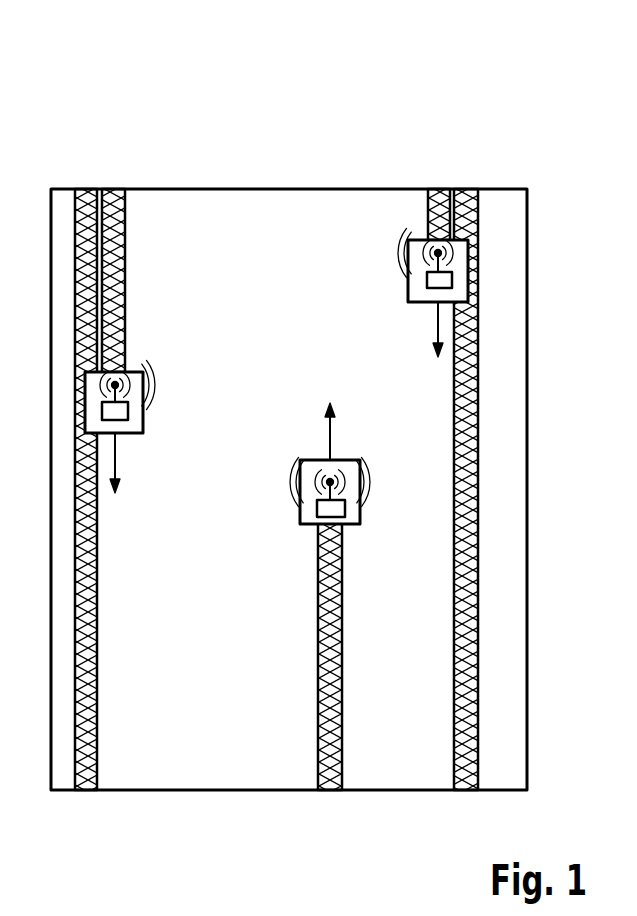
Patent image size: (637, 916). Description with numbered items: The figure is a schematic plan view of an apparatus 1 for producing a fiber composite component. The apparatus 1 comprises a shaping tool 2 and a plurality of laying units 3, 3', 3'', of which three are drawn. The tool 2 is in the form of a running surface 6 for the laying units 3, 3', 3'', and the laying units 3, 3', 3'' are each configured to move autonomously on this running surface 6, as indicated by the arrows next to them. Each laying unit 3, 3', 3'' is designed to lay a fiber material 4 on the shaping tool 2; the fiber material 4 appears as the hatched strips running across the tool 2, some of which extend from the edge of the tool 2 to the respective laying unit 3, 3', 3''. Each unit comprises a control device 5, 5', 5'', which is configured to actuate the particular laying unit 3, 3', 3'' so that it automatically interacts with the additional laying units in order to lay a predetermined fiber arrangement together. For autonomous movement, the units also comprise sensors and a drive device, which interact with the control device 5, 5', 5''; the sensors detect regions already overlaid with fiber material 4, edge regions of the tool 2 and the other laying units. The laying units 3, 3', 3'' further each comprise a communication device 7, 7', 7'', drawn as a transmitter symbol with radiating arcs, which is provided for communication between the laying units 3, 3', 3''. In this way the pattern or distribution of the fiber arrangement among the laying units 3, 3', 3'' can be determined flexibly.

The apparatus 1 is at (414, 116).
The shaping tool 2 is at (178, 188).
The laying unit 3 is at (84, 416).
The laying unit 3' is at (434, 502).
The laying unit 3'' is at (493, 284).
The fiber material 4 is at (90, 786).
The control device 5 is at (71, 440).
The control device 5' is at (448, 555).
The control device 5'' is at (507, 311).
The running surface 6 is at (330, 235).
The communication device 7 is at (84, 375).
The communication device 7' is at (434, 451).
The communication device 7'' is at (493, 245).